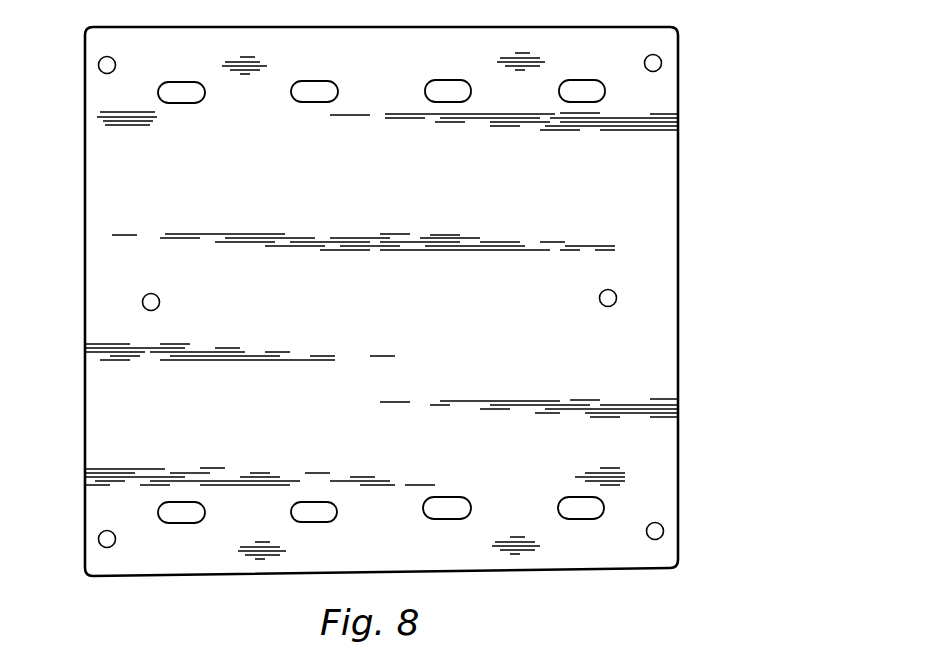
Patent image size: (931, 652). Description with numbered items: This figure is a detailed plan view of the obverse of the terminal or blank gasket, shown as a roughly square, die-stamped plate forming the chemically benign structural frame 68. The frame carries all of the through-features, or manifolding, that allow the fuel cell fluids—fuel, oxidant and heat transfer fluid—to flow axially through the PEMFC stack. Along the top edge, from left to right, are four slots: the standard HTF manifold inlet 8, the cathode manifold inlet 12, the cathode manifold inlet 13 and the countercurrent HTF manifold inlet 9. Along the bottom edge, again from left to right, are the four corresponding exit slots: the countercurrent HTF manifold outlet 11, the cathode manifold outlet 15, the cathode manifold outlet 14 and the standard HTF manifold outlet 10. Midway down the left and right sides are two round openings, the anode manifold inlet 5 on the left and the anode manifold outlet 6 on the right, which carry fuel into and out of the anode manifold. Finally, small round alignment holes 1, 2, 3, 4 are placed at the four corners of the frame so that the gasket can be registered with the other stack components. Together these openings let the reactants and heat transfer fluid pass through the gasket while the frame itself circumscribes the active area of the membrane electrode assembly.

The structural frame 68 is at (718, 226).
The alignment hole 1 is at (98, 65).
The alignment hole 2 is at (662, 63).
The alignment hole 3 is at (664, 528).
The alignment hole 4 is at (99, 535).
The anode manifold inlet 5 is at (143, 301).
The anode manifold outlet 6 is at (616, 296).
The standard HTF manifold inlet 8 is at (184, 82).
The countercurrent HTF manifold inlet 9 is at (586, 80).
The standard HTF manifold outlet 10 is at (588, 518).
The countercurrent HTF manifold outlet 11 is at (186, 522).
The cathode manifold inlet 12 is at (317, 81).
The cathode manifold inlet 13 is at (451, 80).
The cathode manifold outlet 14 is at (452, 518).
The cathode manifold outlet 15 is at (320, 521).